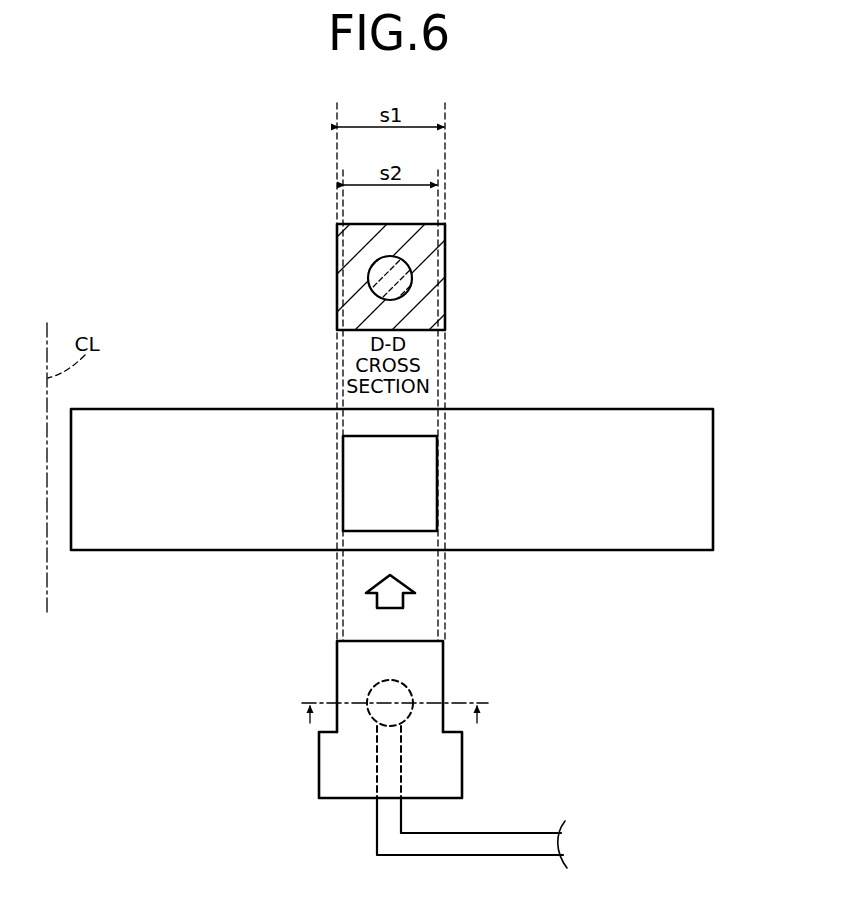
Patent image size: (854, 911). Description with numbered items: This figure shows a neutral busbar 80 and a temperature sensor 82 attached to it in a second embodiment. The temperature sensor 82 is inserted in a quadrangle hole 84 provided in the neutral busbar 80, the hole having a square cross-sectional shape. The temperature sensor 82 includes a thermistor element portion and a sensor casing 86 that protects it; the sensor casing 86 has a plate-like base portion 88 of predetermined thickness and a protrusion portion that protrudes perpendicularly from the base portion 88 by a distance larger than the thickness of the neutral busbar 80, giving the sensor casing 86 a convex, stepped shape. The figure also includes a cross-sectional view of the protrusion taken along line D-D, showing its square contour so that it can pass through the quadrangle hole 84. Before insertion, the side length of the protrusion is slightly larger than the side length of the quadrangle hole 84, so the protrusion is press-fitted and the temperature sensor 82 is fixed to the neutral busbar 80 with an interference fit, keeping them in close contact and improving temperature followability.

The neutral busbar 80 is at (639, 427).
The temperature sensor 82 is at (368, 734).
The quadrangle hole 84 is at (366, 438).
The sensor casing 86 is at (310, 757).
The base portion 88 is at (437, 763).